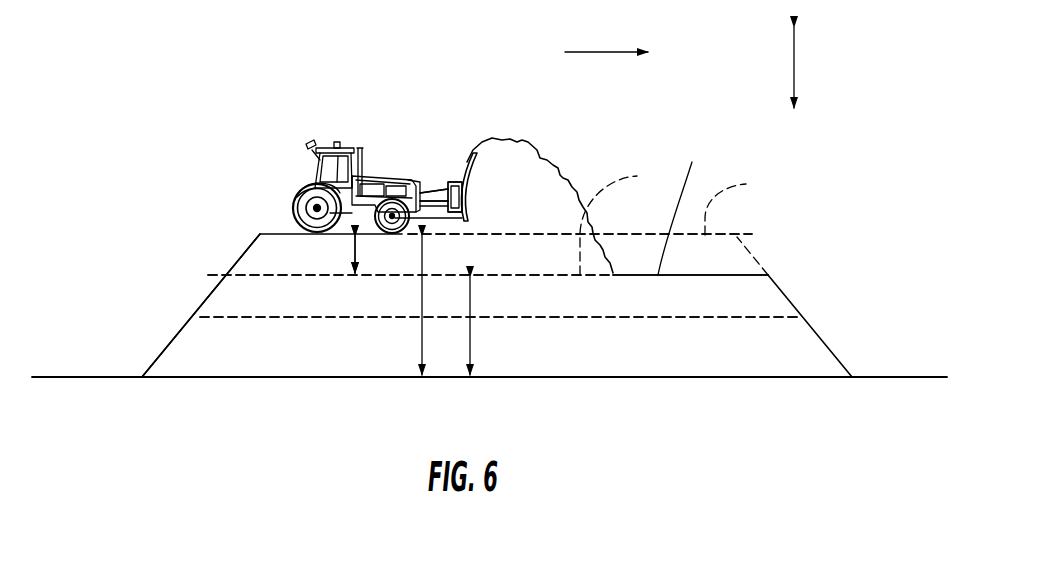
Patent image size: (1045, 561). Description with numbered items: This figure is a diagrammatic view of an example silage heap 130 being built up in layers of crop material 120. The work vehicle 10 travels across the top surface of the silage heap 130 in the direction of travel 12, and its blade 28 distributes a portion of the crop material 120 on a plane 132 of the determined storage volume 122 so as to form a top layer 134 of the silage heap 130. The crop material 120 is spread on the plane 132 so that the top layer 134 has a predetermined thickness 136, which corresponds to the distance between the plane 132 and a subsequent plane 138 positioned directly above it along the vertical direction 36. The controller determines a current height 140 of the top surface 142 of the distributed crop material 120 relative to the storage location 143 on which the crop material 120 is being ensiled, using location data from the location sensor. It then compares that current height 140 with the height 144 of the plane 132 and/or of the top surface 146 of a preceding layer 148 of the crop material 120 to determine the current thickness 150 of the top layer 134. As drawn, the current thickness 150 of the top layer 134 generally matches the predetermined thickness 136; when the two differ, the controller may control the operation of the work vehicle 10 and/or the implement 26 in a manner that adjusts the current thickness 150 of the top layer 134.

The work vehicle 10 is at (323, 148).
The direction of travel 12 is at (608, 52).
The implement 26 is at (440, 156).
The blade 28 is at (464, 163).
The vertical direction 36 is at (790, 70).
The crop material 120 is at (567, 183).
The storage volume 122 is at (834, 176).
The silage heap 130 is at (822, 338).
The plane 132 is at (625, 218).
The top layer 134 is at (757, 235).
The predetermined thickness 136 is at (352, 253).
The subsequent plane 138 is at (742, 223).
The current height 140 is at (420, 335).
The top surface 142 is at (278, 232).
The storage location 143 is at (104, 377).
The height 144 is at (472, 340).
The top surface of preceding layer 146 is at (684, 204).
The preceding layer 148 is at (207, 275).
The current thickness 150 is at (352, 253).